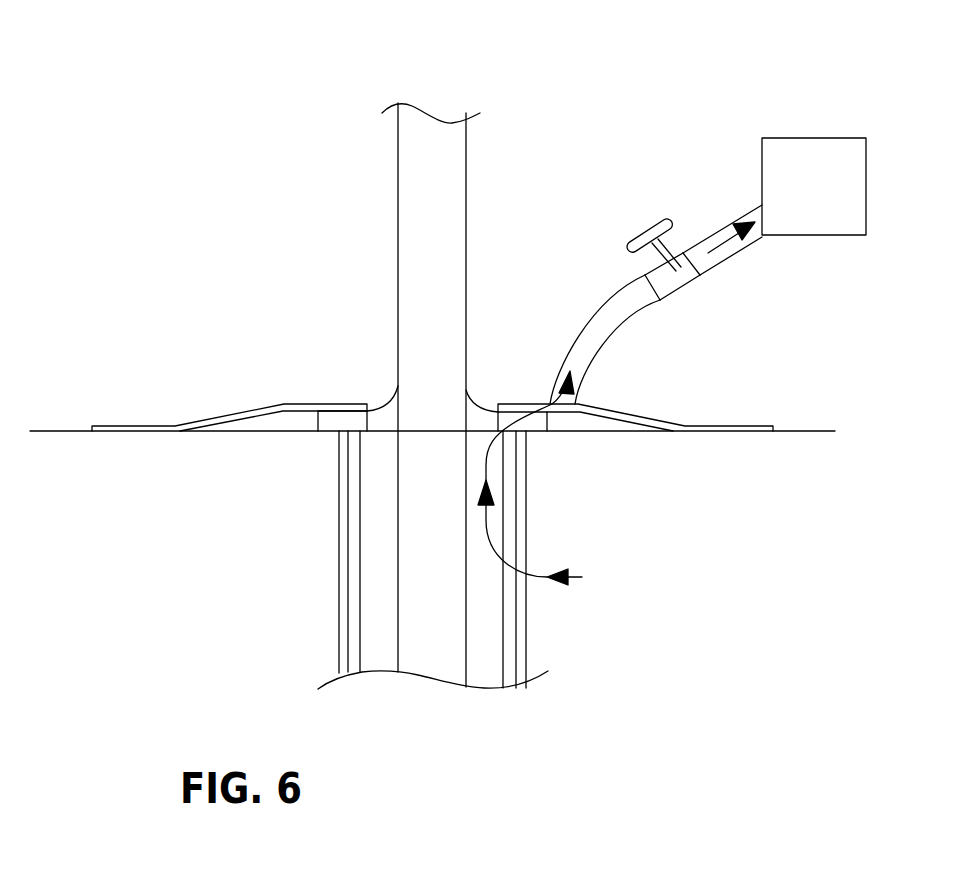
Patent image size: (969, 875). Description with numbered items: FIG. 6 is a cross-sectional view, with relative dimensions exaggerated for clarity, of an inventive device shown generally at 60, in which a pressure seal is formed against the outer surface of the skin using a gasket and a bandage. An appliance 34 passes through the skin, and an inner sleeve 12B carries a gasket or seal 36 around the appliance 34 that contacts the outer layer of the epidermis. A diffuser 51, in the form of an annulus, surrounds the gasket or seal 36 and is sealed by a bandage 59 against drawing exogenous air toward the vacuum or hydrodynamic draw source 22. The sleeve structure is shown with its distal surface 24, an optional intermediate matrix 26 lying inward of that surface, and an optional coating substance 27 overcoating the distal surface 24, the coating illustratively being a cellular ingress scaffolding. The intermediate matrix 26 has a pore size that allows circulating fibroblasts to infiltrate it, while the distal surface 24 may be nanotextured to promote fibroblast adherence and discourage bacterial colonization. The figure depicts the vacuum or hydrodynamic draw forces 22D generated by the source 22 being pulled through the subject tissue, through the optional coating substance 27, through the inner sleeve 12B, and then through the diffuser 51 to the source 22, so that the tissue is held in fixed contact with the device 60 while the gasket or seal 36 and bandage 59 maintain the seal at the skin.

The appliance 34 is at (422, 190).
The bandage 59 is at (243, 411).
The diffuser 51 is at (332, 425).
The gasket or seal 36 is at (480, 413).
The inner sleeve 12B is at (362, 624).
The distal surface 24 is at (520, 484).
The intermediate matrix 26 is at (512, 526).
The coating substance 27 is at (527, 553).
The vacuum or hydrodynamic draw source 22 is at (802, 204).
The vacuum or hydrodynamic draw forces 22D is at (722, 243).
The inventive device 60 is at (622, 156).